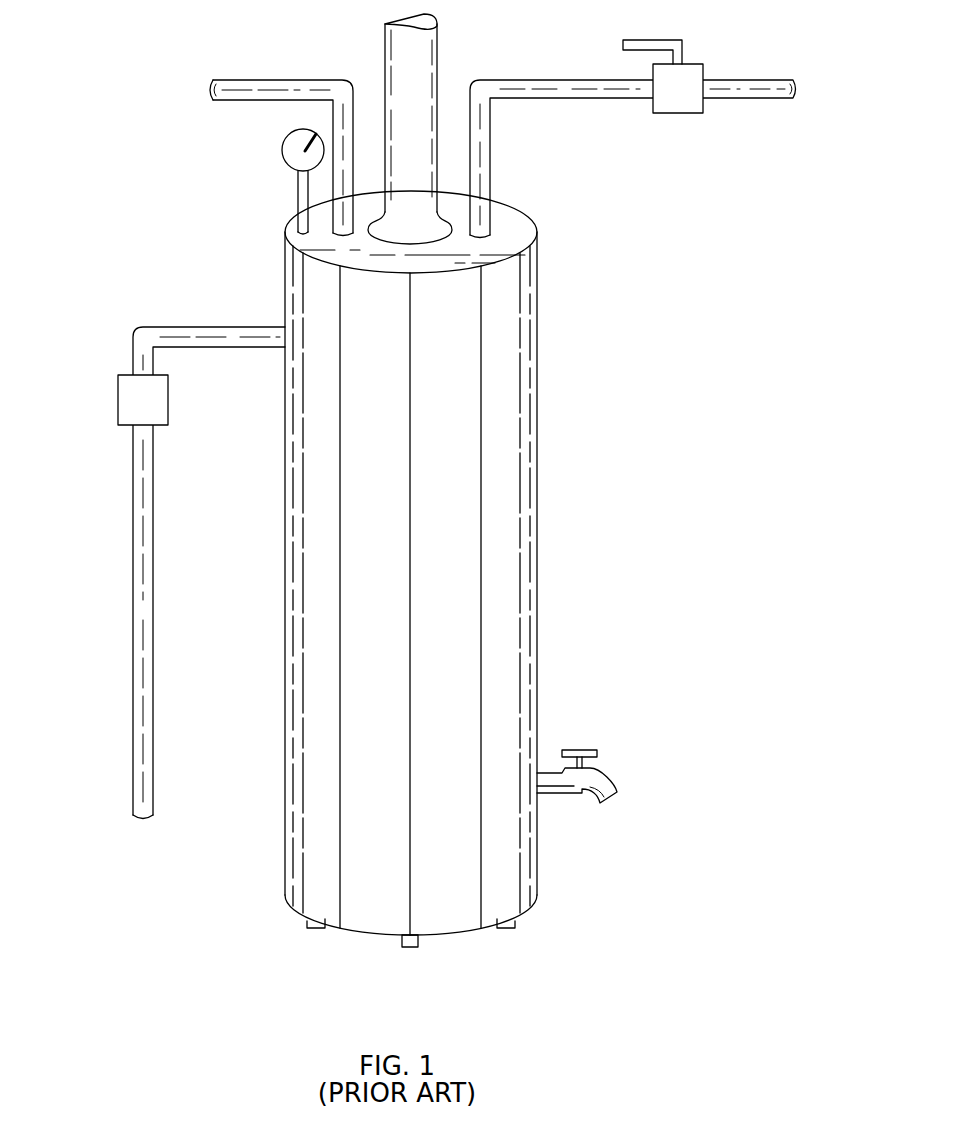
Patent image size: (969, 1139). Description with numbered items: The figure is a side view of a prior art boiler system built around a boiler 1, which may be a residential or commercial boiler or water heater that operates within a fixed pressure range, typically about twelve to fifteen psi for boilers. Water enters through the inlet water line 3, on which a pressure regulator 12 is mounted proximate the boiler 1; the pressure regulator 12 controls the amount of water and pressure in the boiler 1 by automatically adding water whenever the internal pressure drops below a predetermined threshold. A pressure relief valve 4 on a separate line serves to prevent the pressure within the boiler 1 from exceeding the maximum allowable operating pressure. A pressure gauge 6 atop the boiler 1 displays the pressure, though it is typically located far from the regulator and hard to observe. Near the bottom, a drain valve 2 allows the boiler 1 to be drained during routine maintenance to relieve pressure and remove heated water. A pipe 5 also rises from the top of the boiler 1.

The boiler 1 is at (177, 262).
The drain valve 2 is at (596, 775).
The inlet water line 3 is at (745, 80).
The pressure relief valve 4 is at (118, 401).
The outlet pipe 5 is at (566, 78).
The pressure gauge 6 is at (282, 150).
The pressure regulator 12 is at (681, 113).